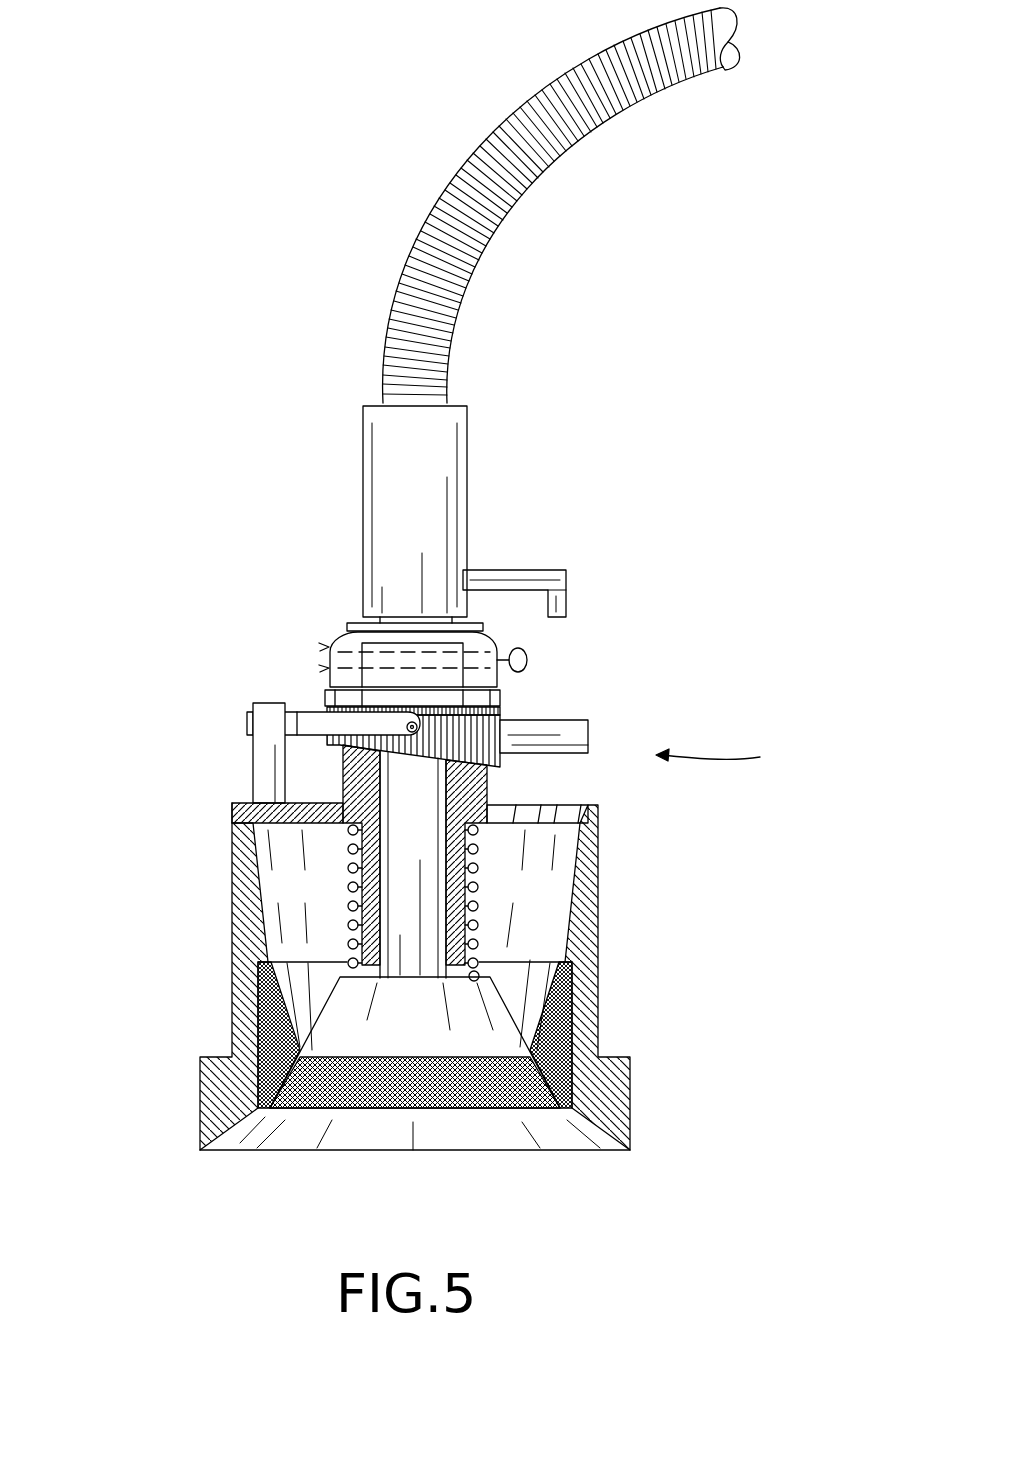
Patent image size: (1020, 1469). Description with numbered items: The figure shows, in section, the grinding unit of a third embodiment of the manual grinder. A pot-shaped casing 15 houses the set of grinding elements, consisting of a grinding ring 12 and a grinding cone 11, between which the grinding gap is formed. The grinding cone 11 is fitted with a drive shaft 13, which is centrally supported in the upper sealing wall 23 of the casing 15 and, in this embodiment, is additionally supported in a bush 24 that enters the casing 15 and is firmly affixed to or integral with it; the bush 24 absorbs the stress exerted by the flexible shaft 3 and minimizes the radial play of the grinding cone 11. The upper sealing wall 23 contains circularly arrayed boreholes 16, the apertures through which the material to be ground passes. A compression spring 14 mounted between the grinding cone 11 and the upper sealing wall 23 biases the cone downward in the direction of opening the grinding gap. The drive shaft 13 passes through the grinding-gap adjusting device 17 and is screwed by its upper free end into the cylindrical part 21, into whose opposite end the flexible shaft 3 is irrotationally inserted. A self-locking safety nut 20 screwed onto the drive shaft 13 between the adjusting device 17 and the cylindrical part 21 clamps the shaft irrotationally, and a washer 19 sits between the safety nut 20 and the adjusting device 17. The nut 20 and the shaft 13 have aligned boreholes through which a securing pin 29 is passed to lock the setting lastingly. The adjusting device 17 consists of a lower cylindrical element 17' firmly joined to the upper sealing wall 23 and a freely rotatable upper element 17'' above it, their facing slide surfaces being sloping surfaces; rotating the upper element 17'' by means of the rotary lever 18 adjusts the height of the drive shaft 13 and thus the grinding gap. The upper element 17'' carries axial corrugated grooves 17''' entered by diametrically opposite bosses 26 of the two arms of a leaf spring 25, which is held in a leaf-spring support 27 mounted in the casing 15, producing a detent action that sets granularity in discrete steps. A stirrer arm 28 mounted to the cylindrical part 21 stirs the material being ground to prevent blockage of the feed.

The flexible shaft 3 is at (487, 250).
The cylindrical part 21 is at (450, 432).
The stirrer arm 28 is at (553, 573).
The safety nut 20 is at (345, 643).
The securing pin 29 is at (527, 656).
The washer 19 is at (501, 697).
The upper element of adjusting device 17'' is at (516, 669).
The corrugated grooves 17''' is at (530, 718).
The rotary lever 18 is at (588, 740).
The grinding-gap adjusting device 17 is at (735, 756).
The lower cylindrical element 17' is at (518, 862).
The boreholes 16 is at (552, 814).
The leaf spring 25 is at (303, 722).
The bosses 26 is at (365, 730).
The leaf-spring support 27 is at (253, 750).
The drive shaft 13 is at (405, 792).
The upper sealing wall 23 is at (232, 810).
The compression spring 14 is at (348, 889).
The bush 24 is at (479, 886).
The casing 15 is at (232, 985).
The grinding ring 12 is at (240, 1031).
The grinding cone 11 is at (465, 1110).